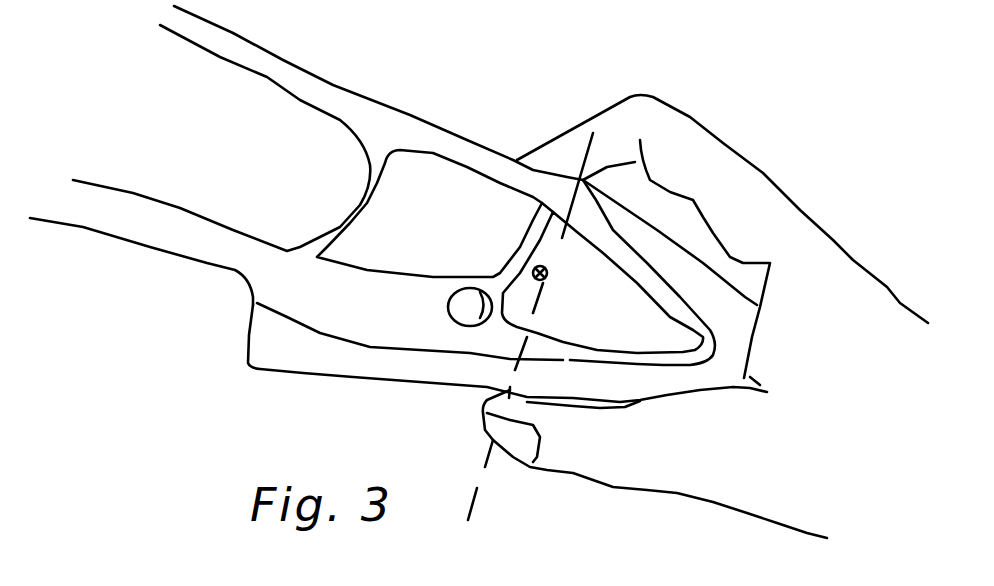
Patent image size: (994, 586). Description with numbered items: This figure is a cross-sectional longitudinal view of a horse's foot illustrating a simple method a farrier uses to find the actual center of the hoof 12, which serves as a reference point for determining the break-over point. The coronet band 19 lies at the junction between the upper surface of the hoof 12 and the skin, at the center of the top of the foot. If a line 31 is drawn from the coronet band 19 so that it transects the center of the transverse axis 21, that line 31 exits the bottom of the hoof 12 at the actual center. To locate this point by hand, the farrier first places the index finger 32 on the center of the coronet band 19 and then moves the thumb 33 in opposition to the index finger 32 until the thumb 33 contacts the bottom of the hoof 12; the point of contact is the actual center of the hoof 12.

The hoof 12 is at (377, 367).
The coronet band 19 is at (583, 178).
The transverse axis 21 is at (547, 277).
The line 31 is at (607, 97).
The index finger 32 is at (543, 157).
The thumb 33 is at (555, 448).